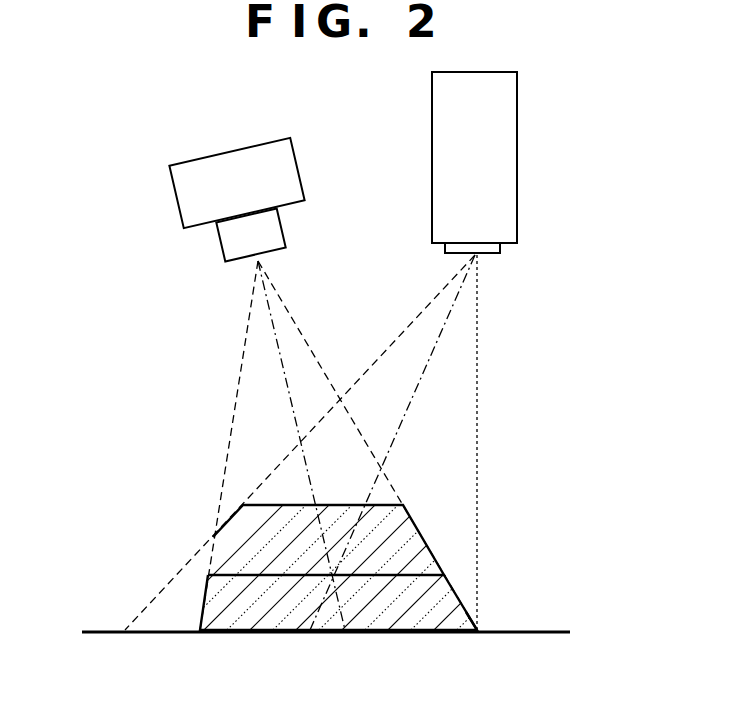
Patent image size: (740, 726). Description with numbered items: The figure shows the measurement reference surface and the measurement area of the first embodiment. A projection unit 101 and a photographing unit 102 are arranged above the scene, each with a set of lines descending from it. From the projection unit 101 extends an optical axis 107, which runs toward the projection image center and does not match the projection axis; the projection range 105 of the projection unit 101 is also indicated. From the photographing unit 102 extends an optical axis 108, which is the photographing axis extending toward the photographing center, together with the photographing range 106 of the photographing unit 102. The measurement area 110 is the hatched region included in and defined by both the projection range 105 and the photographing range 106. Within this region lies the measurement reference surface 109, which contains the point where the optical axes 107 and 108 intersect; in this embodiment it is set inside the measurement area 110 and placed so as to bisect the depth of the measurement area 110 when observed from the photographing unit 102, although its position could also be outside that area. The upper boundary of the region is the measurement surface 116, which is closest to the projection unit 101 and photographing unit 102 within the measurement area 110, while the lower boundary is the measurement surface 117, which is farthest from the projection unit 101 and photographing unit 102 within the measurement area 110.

The projection unit 101 is at (517, 145).
The photographing unit 102 is at (268, 142).
The projection range 105 is at (465, 347).
The photographing range 106 is at (257, 347).
The optical axis 107 is at (410, 406).
The optical axis 108 is at (295, 413).
The measurement reference surface 109 is at (237, 577).
The measurement area 110 is at (454, 622).
The measurement surface 116 is at (268, 505).
The measurement surface 117 is at (282, 633).